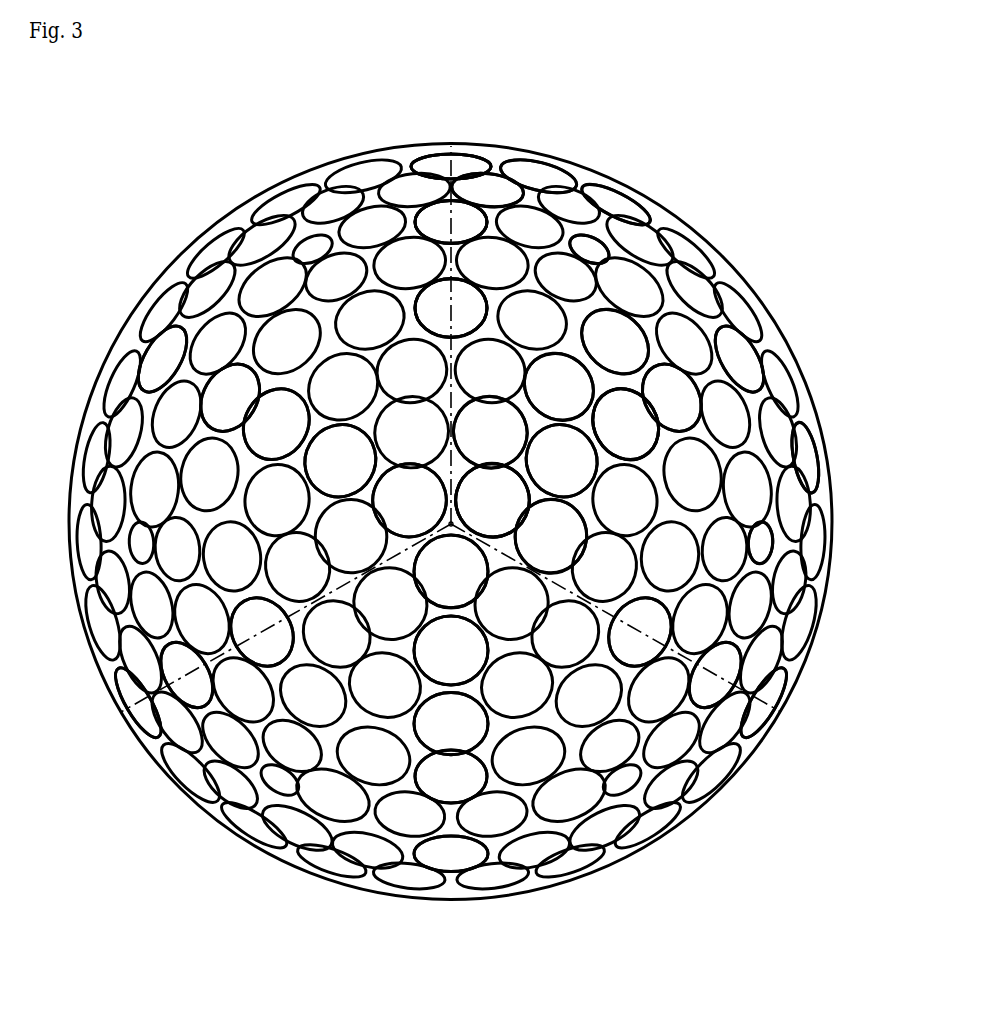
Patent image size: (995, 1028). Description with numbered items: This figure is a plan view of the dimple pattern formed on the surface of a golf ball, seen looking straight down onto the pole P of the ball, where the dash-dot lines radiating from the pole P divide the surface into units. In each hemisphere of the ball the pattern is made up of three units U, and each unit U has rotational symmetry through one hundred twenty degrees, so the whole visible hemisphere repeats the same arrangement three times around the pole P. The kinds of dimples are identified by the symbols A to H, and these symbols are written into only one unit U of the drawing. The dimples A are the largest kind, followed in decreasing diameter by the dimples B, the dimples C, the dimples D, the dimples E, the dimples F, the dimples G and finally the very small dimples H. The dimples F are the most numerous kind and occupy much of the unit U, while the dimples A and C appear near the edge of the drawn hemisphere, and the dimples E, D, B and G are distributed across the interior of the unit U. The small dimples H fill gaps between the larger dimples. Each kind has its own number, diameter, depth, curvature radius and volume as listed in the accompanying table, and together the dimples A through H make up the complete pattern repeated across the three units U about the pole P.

The dimple A is at (577, 172).
The dimple B is at (597, 430).
The dimple C is at (497, 150).
The dimple D is at (660, 403).
The dimple E is at (617, 200).
The dimple F is at (687, 243).
The dimple G is at (516, 481).
The dimple H is at (669, 396).
The pole P is at (451, 524).
The unit U is at (187, 373).